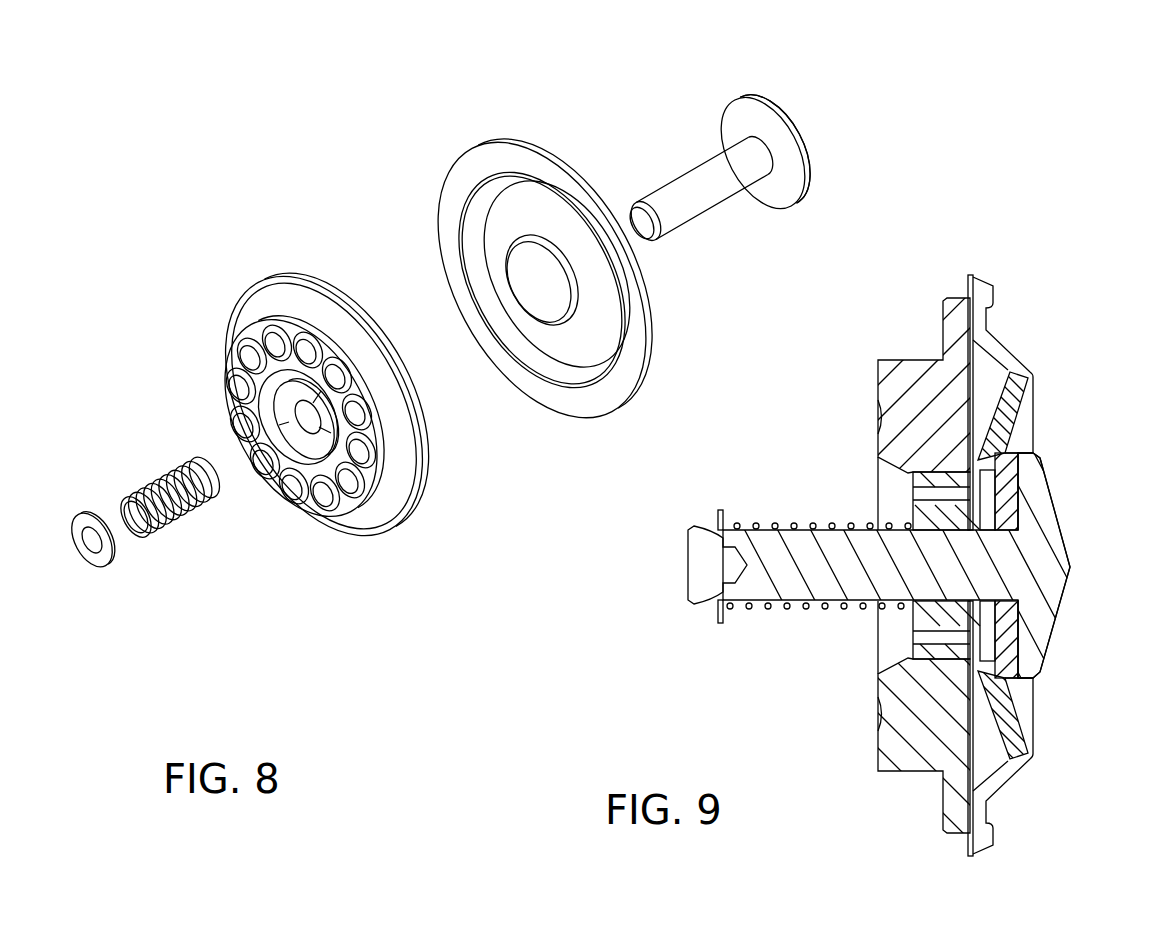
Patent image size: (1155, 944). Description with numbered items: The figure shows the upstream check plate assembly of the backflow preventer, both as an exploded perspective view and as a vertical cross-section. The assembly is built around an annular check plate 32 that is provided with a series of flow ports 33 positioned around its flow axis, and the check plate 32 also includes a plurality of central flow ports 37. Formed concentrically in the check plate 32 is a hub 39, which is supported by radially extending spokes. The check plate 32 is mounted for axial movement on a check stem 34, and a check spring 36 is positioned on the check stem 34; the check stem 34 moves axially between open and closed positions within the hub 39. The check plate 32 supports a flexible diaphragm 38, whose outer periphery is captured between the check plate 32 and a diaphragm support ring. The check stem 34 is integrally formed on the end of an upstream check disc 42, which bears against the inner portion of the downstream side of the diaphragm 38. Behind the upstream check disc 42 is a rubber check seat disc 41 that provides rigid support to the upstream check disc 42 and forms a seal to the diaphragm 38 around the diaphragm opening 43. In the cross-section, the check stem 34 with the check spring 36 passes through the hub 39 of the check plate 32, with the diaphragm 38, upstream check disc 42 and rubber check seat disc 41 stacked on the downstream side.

In FIG. 8, the check plate 32 is at (292, 298).
In FIG. 9, the check plate 32 is at (918, 370).
In FIG. 8, the flow ports 33 is at (228, 362).
In FIG. 9, the flow ports 33 is at (873, 420).
In FIG. 8, the check stem 34 is at (700, 183).
In FIG. 9, the check stem 34 is at (765, 543).
In FIG. 8, the check spring 36 is at (148, 478).
In FIG. 9, the check spring 36 is at (783, 613).
In FIG. 8, the central flow ports 37 is at (275, 411).
In FIG. 8, the flexible diaphragm 38 is at (503, 157).
In FIG. 9, the flexible diaphragm 38 is at (1023, 372).
In FIG. 8, the hub 39 is at (298, 382).
In FIG. 8, the rubber check seat disc 41 is at (737, 117).
In FIG. 9, the rubber check seat disc 41 is at (1007, 638).
In FIG. 8, the upstream check disc 42 is at (800, 134).
In FIG. 9, the upstream check disc 42 is at (1037, 522).
In FIG. 9, the diaphragm opening 43 is at (990, 662).